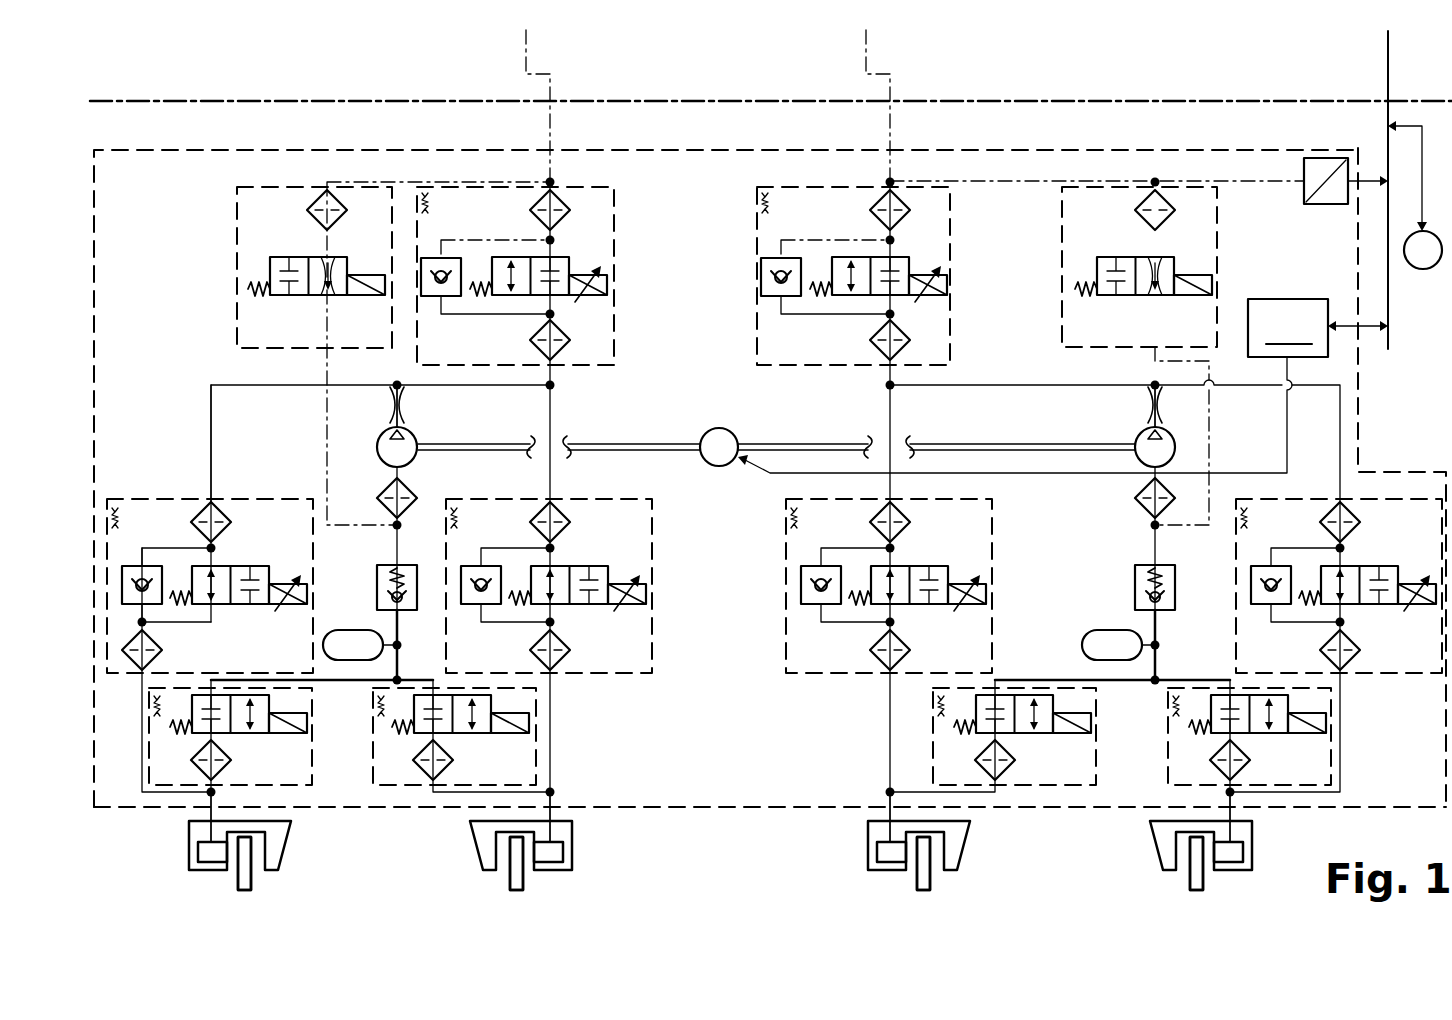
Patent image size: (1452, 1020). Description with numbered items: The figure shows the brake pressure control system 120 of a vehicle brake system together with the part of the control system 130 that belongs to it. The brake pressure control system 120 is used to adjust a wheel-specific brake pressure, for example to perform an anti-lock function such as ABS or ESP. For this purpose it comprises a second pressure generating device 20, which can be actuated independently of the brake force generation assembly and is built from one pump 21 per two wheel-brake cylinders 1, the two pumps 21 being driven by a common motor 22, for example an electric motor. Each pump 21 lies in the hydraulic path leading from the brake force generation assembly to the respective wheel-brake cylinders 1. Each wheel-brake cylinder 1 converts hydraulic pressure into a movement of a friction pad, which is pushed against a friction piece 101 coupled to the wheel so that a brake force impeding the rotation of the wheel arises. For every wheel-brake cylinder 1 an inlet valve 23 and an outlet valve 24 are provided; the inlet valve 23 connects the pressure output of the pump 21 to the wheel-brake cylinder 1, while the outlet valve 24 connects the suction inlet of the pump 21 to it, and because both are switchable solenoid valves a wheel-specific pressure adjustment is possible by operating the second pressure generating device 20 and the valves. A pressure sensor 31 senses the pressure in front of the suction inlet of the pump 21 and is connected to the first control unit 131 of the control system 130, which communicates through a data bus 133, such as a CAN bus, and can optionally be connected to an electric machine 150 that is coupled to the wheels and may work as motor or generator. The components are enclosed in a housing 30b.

The wheel-brake cylinder 1 is at (188, 858).
The friction piece 101 is at (251, 876).
The second pressure generating device 20 is at (718, 430).
The pump 21 is at (378, 447).
The motor 22 is at (722, 467).
The inlet valve 23 is at (267, 658).
The outlet valve 24 is at (290, 776).
The hydraulic unit housing 30b is at (714, 810).
The pressure sensor 31 is at (1325, 205).
The brake pressure control system 120 is at (150, 152).
The control system 130 is at (1376, 358).
The first control unit 131 is at (1063, 386).
The data bus 133 is at (1388, 68).
The electric machine 150 is at (1423, 270).